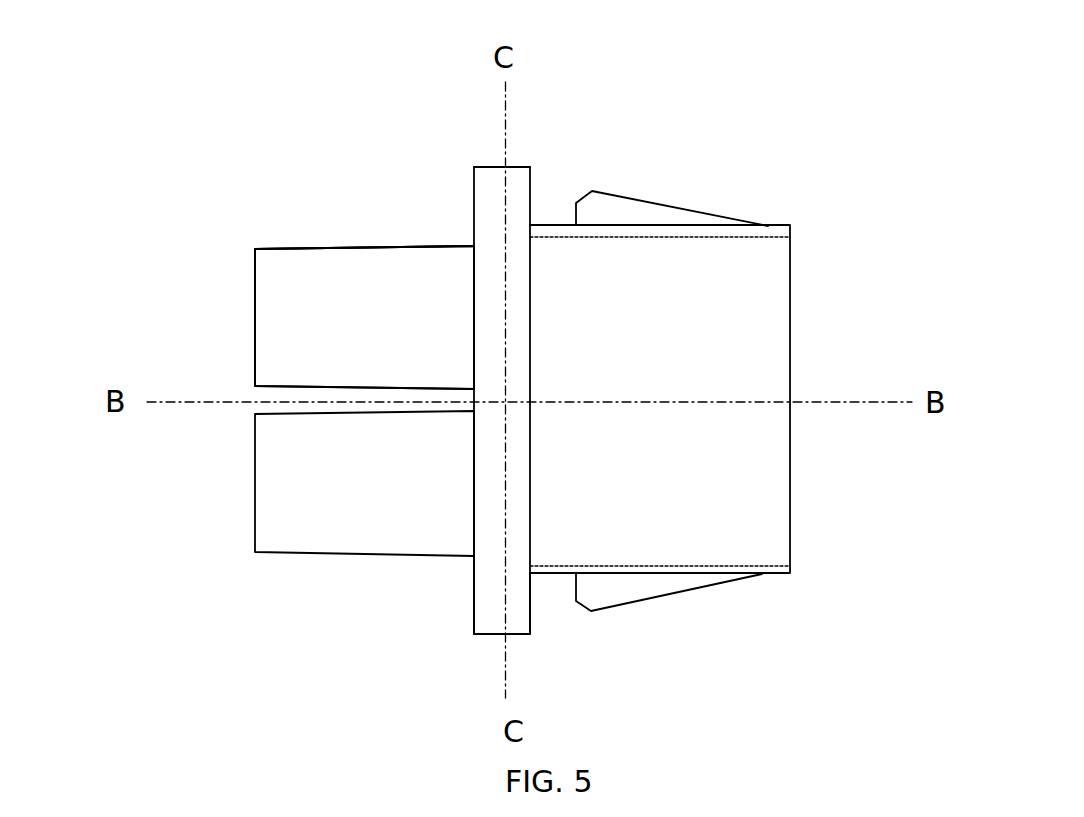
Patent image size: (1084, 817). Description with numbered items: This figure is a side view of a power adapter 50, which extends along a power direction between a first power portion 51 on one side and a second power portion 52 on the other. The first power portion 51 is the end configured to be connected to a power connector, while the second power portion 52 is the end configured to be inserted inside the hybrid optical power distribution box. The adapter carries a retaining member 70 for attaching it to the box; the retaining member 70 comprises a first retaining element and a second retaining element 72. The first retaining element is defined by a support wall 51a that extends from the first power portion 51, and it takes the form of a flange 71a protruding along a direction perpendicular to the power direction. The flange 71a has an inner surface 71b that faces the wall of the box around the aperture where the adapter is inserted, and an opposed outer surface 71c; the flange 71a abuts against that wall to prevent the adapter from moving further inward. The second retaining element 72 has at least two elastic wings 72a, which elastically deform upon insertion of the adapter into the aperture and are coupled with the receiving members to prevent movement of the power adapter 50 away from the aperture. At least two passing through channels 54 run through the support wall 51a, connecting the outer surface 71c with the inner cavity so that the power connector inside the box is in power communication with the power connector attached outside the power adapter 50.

The power adapter 50 is at (252, 632).
The first power portion 51 is at (379, 214).
The support wall 51a is at (467, 230).
The second power portion 52 is at (775, 376).
The passing through channels 54 is at (293, 279).
The retaining member 70 is at (668, 181).
The flange 71a is at (492, 173).
The inner surface 71b is at (532, 603).
The outer surface 71c is at (467, 601).
The second retaining element 72 is at (622, 197).
The elastic wings 72a is at (667, 592).